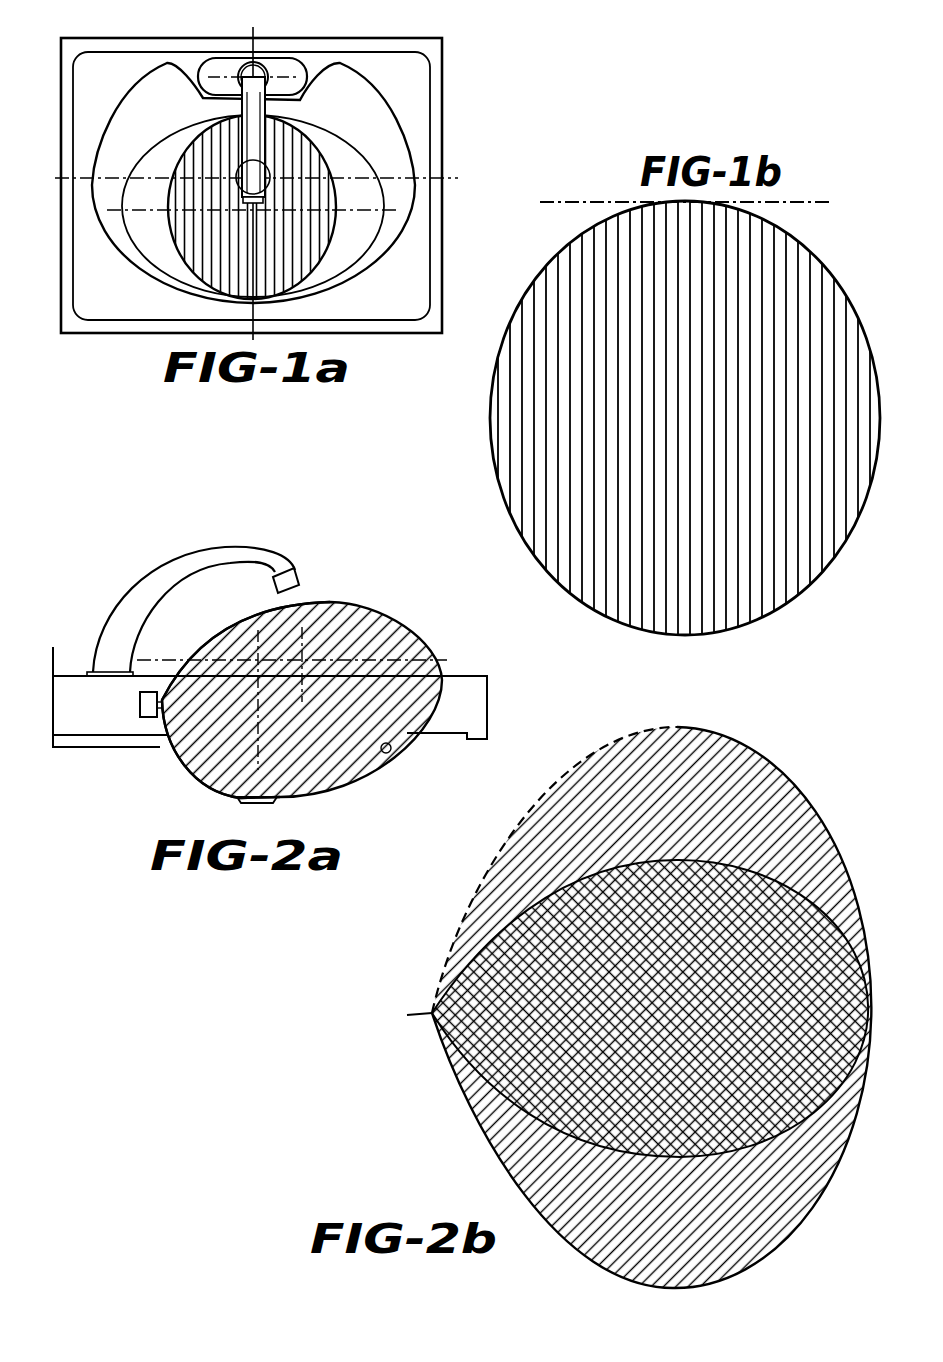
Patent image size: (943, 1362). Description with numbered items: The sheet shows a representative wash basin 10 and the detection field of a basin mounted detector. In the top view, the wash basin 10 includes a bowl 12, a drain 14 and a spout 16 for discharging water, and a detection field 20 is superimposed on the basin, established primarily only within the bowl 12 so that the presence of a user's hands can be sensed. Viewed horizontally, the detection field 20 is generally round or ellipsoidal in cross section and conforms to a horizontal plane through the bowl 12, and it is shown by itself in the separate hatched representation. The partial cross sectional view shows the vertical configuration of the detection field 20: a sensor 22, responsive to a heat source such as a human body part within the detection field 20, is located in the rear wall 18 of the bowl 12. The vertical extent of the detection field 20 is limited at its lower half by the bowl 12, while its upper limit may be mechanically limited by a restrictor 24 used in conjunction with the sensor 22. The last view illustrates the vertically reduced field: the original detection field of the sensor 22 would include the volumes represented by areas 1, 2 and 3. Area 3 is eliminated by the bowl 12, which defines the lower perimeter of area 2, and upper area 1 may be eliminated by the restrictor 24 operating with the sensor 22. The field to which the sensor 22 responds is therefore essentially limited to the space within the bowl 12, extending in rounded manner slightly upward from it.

In FIG. 1A, the wash basin 10 is at (93, 328).
In FIG. 2A, the wash basin 10 is at (462, 690).
In FIG. 1A, the bowl 12 is at (367, 237).
In FIG. 2A, the bowl 12 is at (390, 752).
In FIG. 1A, the drain 14 is at (274, 178).
In FIG. 2A, the drain 14 is at (280, 799).
In FIG. 1A, the spout 16 is at (248, 137).
In FIG. 2A, the spout 16 is at (277, 555).
In FIG. 1A, the rear wall 18 is at (310, 124).
In FIG. 2A, the rear wall 18 is at (170, 682).
In FIG. 1A, the detection field 20 is at (318, 250).
In FIG. 1B, the detection field 20 is at (805, 566).
In FIG. 2A, the detection field 20 is at (417, 627).
In FIG. 2B, the detection field 20 is at (822, 1209).
In FIG. 2A, the sensor 22 is at (140, 702).
In FIG. 2A, the restrictor 24 is at (165, 718).
In FIG. 2B, the upper area 1 is at (649, 870).
In FIG. 2B, the area 2 is at (650, 1008).
In FIG. 2B, the area 3 is at (649, 1150).